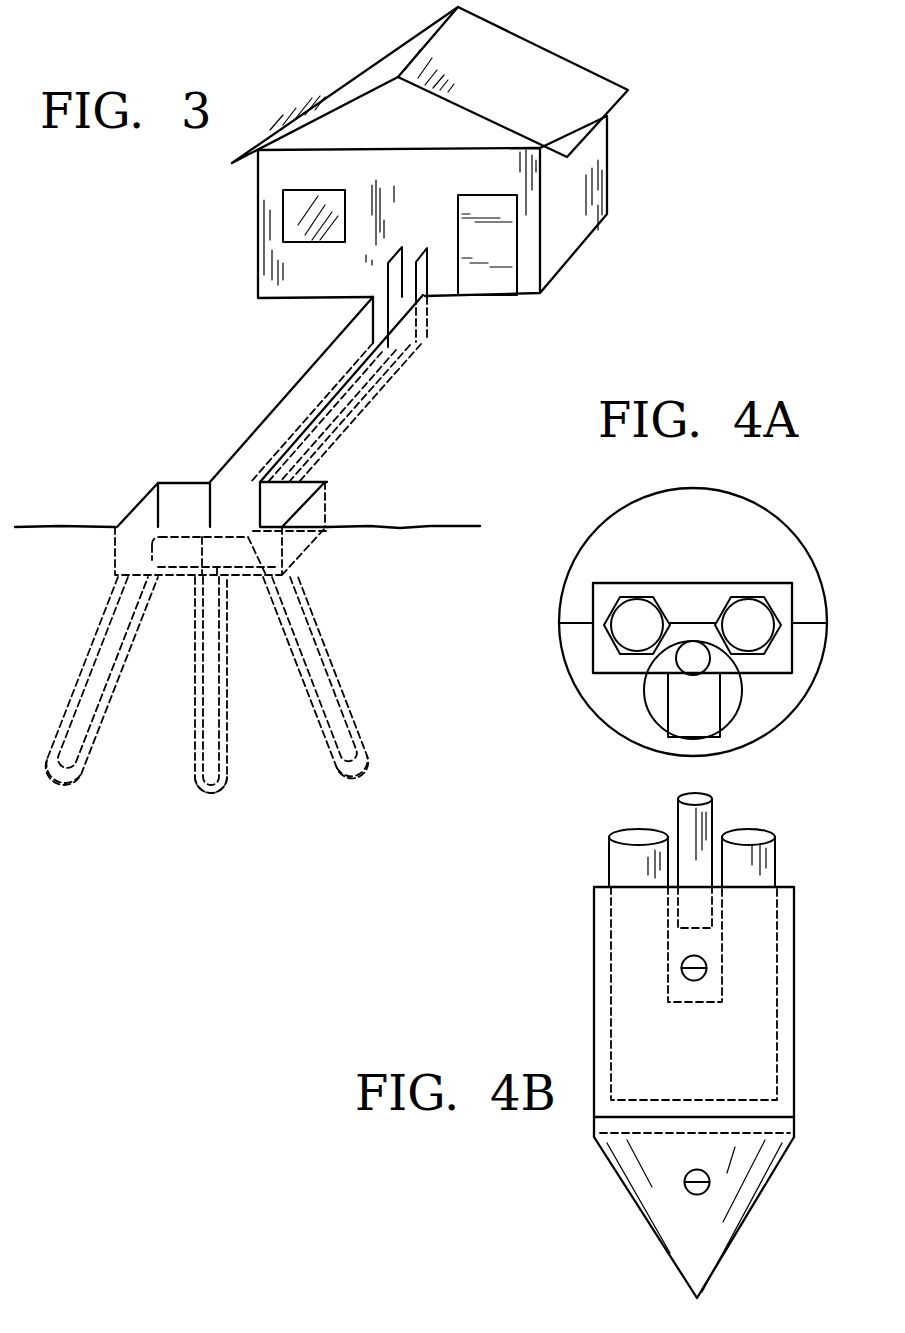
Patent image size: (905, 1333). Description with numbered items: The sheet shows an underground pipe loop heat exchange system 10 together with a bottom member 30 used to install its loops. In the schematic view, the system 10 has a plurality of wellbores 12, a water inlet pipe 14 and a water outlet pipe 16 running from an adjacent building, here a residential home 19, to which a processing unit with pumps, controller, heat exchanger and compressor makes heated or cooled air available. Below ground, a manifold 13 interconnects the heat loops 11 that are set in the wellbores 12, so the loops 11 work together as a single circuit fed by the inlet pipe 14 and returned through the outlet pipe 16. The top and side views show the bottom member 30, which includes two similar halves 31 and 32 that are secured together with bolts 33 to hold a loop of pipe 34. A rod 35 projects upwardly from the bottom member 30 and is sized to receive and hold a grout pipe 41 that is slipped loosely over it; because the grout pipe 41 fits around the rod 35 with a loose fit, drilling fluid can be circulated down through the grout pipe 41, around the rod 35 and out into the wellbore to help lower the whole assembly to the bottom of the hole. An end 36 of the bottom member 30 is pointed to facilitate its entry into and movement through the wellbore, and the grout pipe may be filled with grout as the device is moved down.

In FIG. 3, the system 10 is at (186, 463).
In FIG. 3, the heat loops 11 is at (82, 697).
In FIG. 3, the wellbores 12 is at (100, 733).
In FIG. 3, the manifold 13 is at (182, 542).
In FIG. 3, the water inlet pipe 14 is at (393, 363).
In FIG. 3, the water outlet pipe 16 is at (390, 313).
In FIG. 3, the residential home 19 is at (262, 230).
In FIG. 4A, the bottom member 30 is at (803, 547).
In FIG. 4B, the bottom member 30 is at (795, 978).
In FIG. 4A, the half 31 is at (805, 663).
In FIG. 4A, the half 32 is at (733, 530).
In FIG. 4B, the bolts 33 is at (687, 962).
In FIG. 4B, the loop of pipe 34 is at (765, 862).
In FIG. 4A, the rod 35 is at (677, 658).
In FIG. 4B, the rod 35 is at (697, 823).
In FIG. 4B, the end 36 is at (755, 1203).
In FIG. 4A, the grout pipe 41 is at (643, 703).